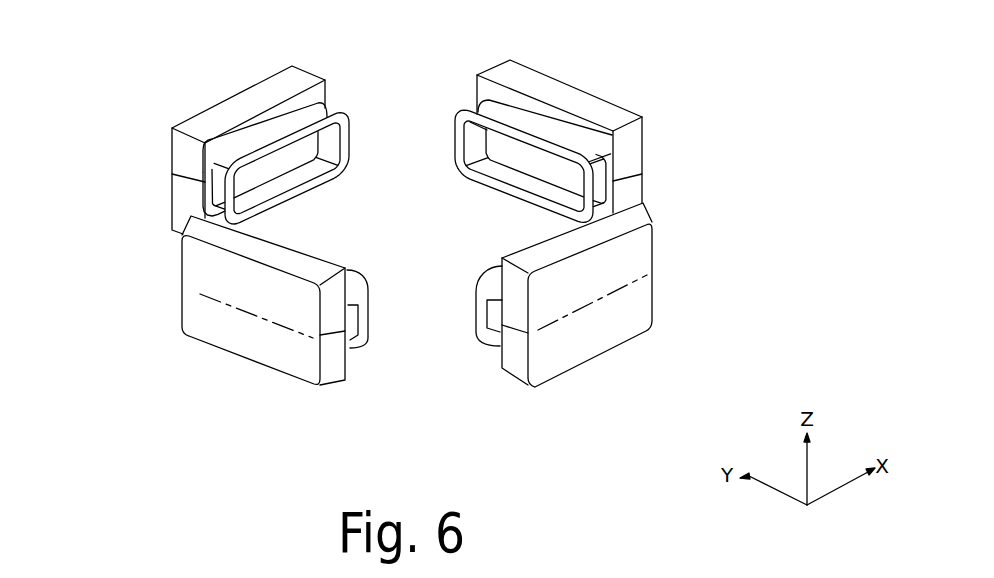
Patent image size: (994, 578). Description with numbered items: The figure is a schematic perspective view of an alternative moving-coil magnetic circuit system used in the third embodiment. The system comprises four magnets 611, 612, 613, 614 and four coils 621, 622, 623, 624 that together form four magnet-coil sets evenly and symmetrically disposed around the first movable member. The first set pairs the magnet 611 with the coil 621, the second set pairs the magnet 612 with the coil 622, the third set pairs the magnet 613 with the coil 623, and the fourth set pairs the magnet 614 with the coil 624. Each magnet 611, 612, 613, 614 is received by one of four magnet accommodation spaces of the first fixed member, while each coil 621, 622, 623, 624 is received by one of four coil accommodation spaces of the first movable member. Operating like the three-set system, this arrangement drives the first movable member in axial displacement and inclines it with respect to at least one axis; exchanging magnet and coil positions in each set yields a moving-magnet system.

The magnet 611 is at (600, 110).
The magnet 612 is at (617, 213).
The magnet 613 is at (328, 348).
The magnet 614 is at (185, 158).
The coil 621 is at (476, 102).
The coil 622 is at (484, 346).
The coil 623 is at (362, 318).
The coil 624 is at (293, 127).